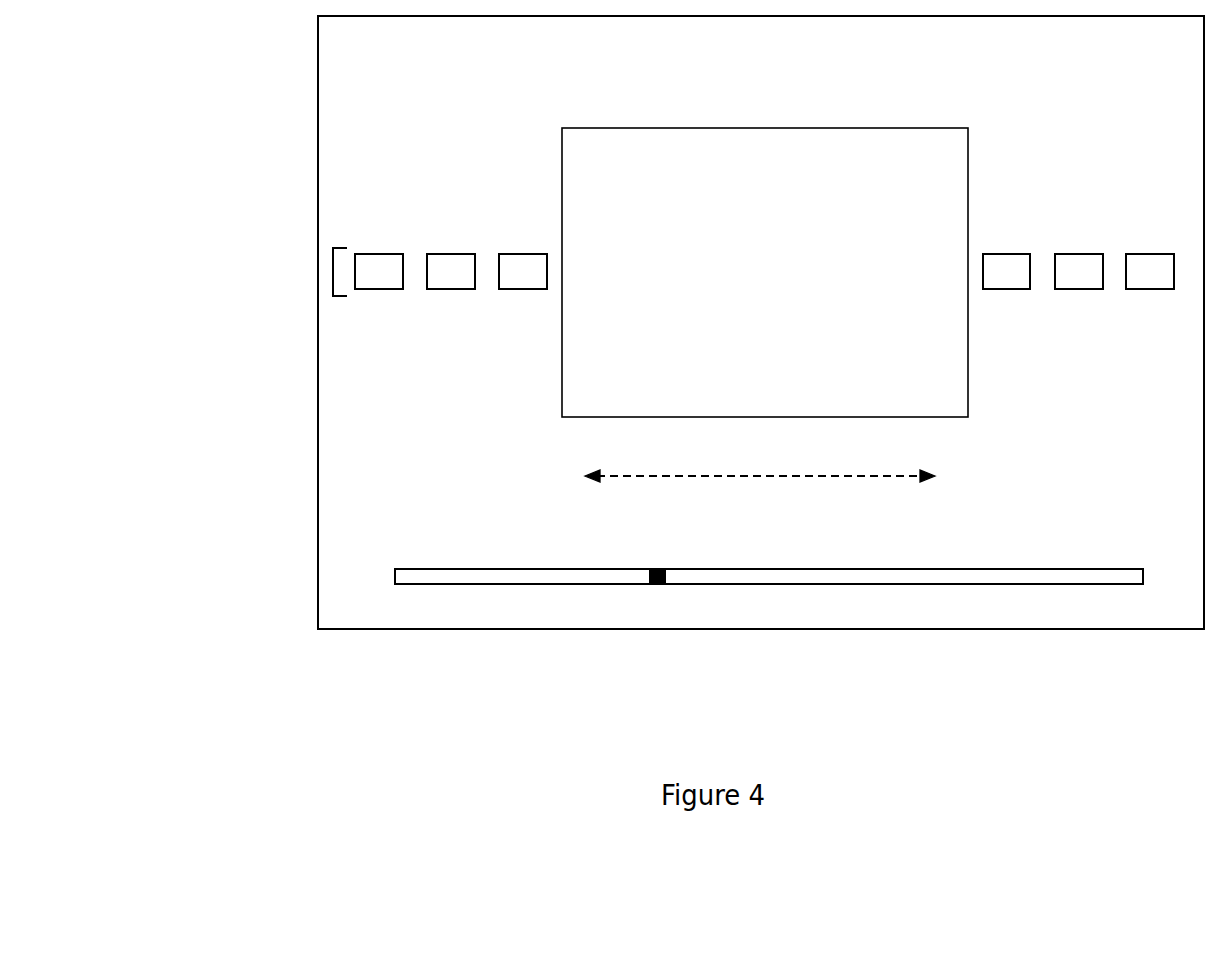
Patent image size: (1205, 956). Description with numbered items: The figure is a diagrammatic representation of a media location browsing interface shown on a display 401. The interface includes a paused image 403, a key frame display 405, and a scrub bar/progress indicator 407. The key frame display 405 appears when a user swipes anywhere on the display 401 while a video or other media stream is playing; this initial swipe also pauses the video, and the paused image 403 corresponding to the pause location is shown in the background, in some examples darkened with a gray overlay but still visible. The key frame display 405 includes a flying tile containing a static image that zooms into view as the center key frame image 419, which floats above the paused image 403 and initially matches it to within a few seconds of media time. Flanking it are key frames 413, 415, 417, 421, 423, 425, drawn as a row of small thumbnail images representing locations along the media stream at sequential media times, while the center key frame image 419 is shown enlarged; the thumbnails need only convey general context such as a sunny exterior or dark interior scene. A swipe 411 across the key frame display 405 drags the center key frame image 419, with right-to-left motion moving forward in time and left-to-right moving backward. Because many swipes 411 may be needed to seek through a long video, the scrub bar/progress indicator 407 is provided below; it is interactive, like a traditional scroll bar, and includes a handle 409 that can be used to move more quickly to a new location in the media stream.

The display 401 is at (315, 62).
The paused image 403 is at (363, 129).
The key frame display 405 is at (330, 269).
The scrub bar/progress indicator 407 is at (395, 573).
The handle 409 is at (657, 586).
The swipe 411 is at (760, 465).
The key frame 413 is at (379, 271).
The key frame 415 is at (451, 271).
The key frame 417 is at (523, 271).
The center key frame image 419 is at (765, 272).
The key frame 421 is at (1006, 271).
The key frame 423 is at (1079, 271).
The key frame 425 is at (1150, 271).